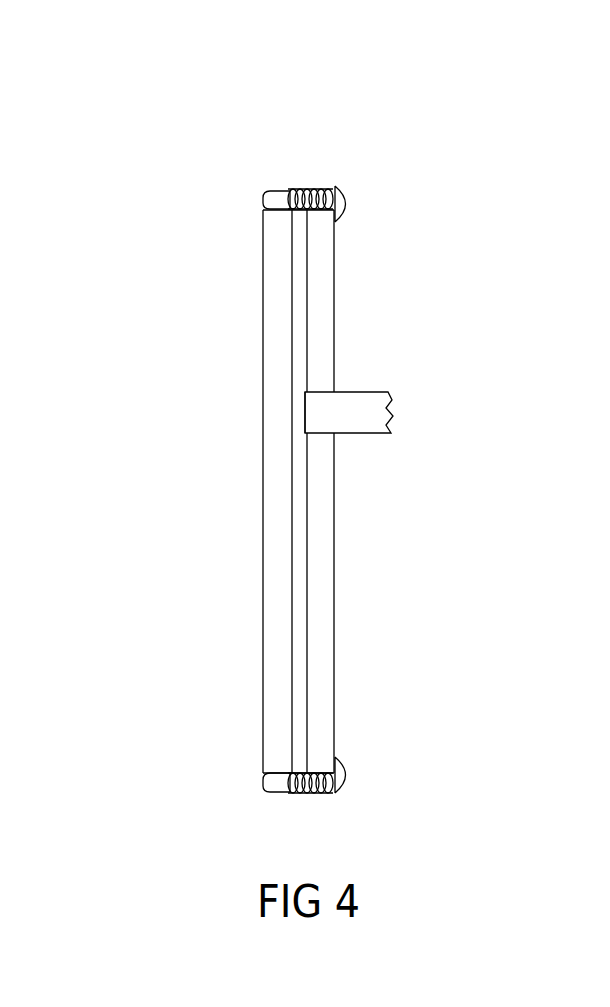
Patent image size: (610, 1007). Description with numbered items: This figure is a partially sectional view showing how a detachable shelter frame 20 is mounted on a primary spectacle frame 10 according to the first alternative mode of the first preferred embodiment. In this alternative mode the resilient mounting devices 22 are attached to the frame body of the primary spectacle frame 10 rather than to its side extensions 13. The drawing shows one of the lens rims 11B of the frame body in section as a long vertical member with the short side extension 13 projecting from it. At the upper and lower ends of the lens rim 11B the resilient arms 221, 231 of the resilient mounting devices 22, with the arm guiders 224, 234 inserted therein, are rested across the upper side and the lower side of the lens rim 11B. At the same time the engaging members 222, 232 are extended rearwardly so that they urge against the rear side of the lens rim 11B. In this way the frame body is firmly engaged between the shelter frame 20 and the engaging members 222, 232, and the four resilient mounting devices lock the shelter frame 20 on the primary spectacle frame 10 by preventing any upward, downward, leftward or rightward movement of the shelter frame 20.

The primary spectacle frame 10 is at (375, 648).
The detachable shelter frame 20 is at (235, 638).
The resilient mounting device 22 is at (487, 175).
The lens rim 11B is at (325, 317).
The side extension 13 is at (350, 422).
The resilient arm 221 is at (331, 186).
The resilient arm 231 is at (322, 793).
The engaging member 222 is at (346, 215).
The engaging member 232 is at (357, 780).
The arm guider 224 is at (290, 189).
The arm guider 234 is at (300, 790).